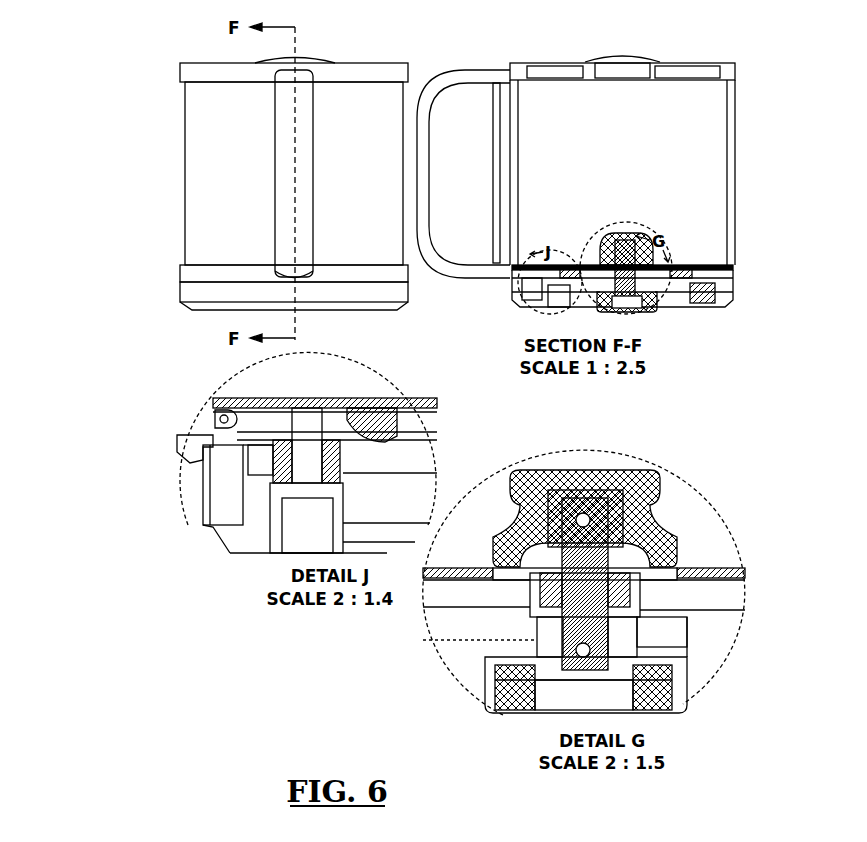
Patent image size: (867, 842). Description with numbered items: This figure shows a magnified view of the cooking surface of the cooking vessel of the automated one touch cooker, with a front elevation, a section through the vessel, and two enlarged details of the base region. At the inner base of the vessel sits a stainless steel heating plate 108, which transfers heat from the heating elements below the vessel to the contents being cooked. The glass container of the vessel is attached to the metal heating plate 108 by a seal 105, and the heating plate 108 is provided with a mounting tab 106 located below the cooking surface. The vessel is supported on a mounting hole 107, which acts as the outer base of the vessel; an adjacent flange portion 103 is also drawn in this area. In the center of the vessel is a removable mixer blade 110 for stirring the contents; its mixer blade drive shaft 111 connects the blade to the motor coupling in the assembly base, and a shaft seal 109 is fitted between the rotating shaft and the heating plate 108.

The base flange 103 is at (205, 437).
The seal 105 is at (217, 420).
The mounting tab 106 is at (303, 422).
The mounting hole 107 is at (277, 517).
The heating plate 108 is at (400, 406).
The shaft seal 109 is at (550, 590).
The mixer blade 110 is at (652, 512).
The mixer blade drive shaft 111 is at (573, 613).